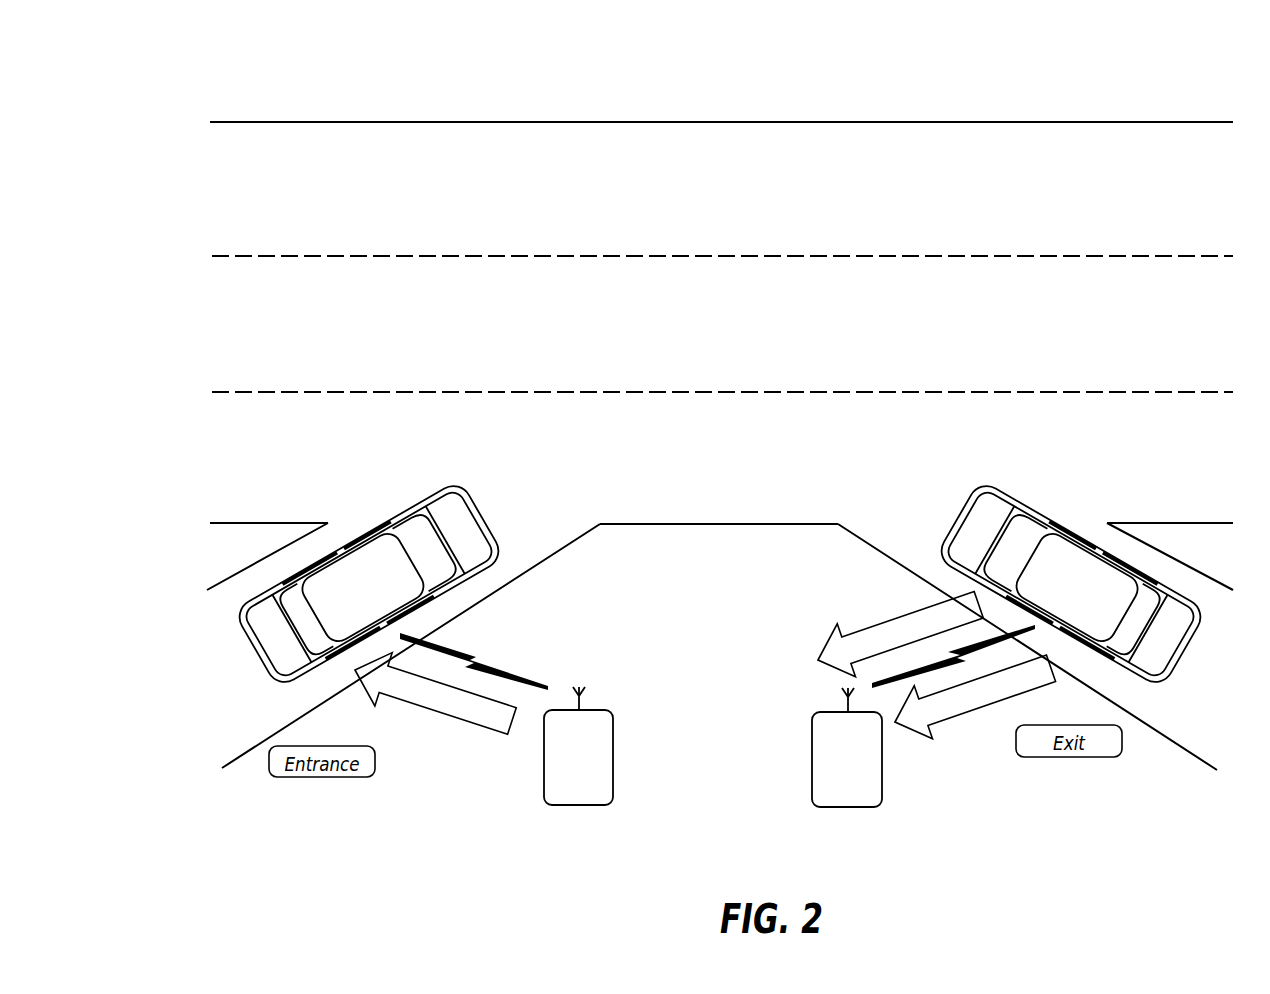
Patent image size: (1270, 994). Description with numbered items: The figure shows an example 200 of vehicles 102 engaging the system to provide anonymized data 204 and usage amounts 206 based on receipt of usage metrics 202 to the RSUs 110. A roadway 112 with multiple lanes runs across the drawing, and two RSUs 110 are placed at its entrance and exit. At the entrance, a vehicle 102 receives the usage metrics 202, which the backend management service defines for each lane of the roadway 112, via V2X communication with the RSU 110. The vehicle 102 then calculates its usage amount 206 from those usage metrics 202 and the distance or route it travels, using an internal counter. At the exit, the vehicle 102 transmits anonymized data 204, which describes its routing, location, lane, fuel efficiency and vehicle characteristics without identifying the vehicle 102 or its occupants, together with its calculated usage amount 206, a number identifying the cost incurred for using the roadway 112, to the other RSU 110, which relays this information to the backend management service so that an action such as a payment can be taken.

The example 200 is at (214, 40).
The roadway 112 is at (1025, 122).
The vehicle 102 is at (720, 584).
The RSU 110 is at (713, 747).
The usage metrics 202 is at (452, 718).
The anonymized data 204 is at (898, 610).
The usage amount 206 is at (990, 707).